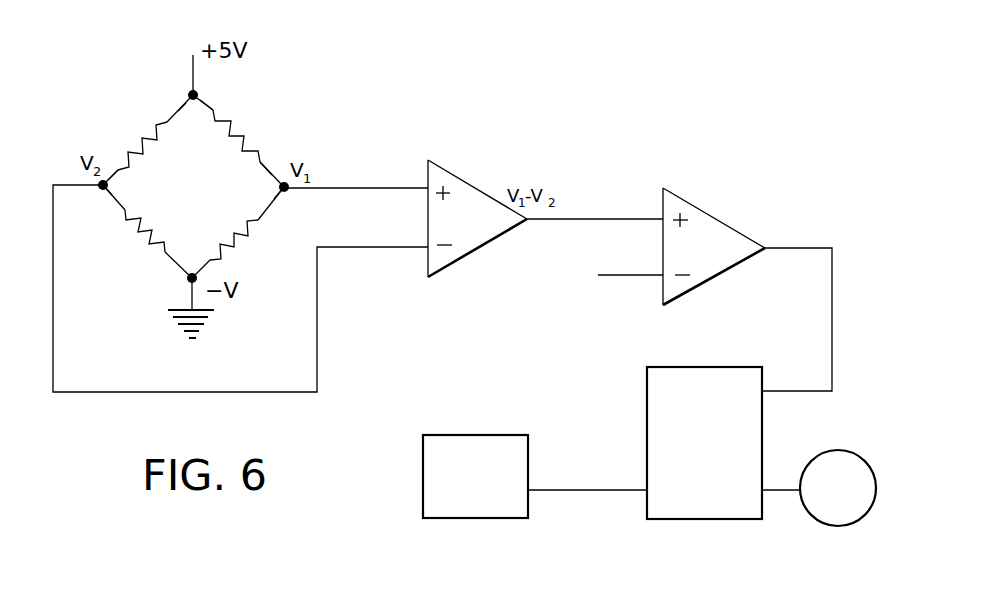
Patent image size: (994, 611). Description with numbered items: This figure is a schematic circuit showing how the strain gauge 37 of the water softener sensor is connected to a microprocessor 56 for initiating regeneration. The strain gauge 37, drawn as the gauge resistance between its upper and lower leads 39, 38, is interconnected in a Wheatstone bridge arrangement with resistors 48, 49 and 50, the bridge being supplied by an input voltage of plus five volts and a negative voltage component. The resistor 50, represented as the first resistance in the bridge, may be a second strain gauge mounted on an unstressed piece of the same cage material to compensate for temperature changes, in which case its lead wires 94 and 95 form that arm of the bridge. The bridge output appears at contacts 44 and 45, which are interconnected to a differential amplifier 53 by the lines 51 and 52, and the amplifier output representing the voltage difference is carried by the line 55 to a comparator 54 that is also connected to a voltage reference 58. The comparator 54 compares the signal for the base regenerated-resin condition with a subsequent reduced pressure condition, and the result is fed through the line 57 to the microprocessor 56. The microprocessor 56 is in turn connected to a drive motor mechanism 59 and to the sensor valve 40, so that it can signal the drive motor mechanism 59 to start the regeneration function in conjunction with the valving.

The strain gauge 37 is at (287, 113).
The lower lead of gauge resistor 38 is at (262, 162).
The upper lead of gauge resistor 39 is at (213, 110).
The sensor valve 40 is at (827, 492).
The contact 44 is at (100, 190).
The contact 45 is at (288, 192).
The resistor 48 is at (280, 243).
The resistor 49 is at (114, 262).
The resistor 50 is at (104, 113).
The line 51 is at (358, 188).
The line 52 is at (360, 248).
The differential amplifier 53 is at (475, 187).
The comparator 54 is at (717, 218).
The line 55 is at (600, 219).
The microprocessor 56 is at (715, 448).
The line 57 is at (833, 322).
The voltage reference 58 is at (627, 277).
The drive motor mechanism 59 is at (483, 478).
The lead wire 94 is at (180, 104).
The lead wire 95 is at (115, 173).